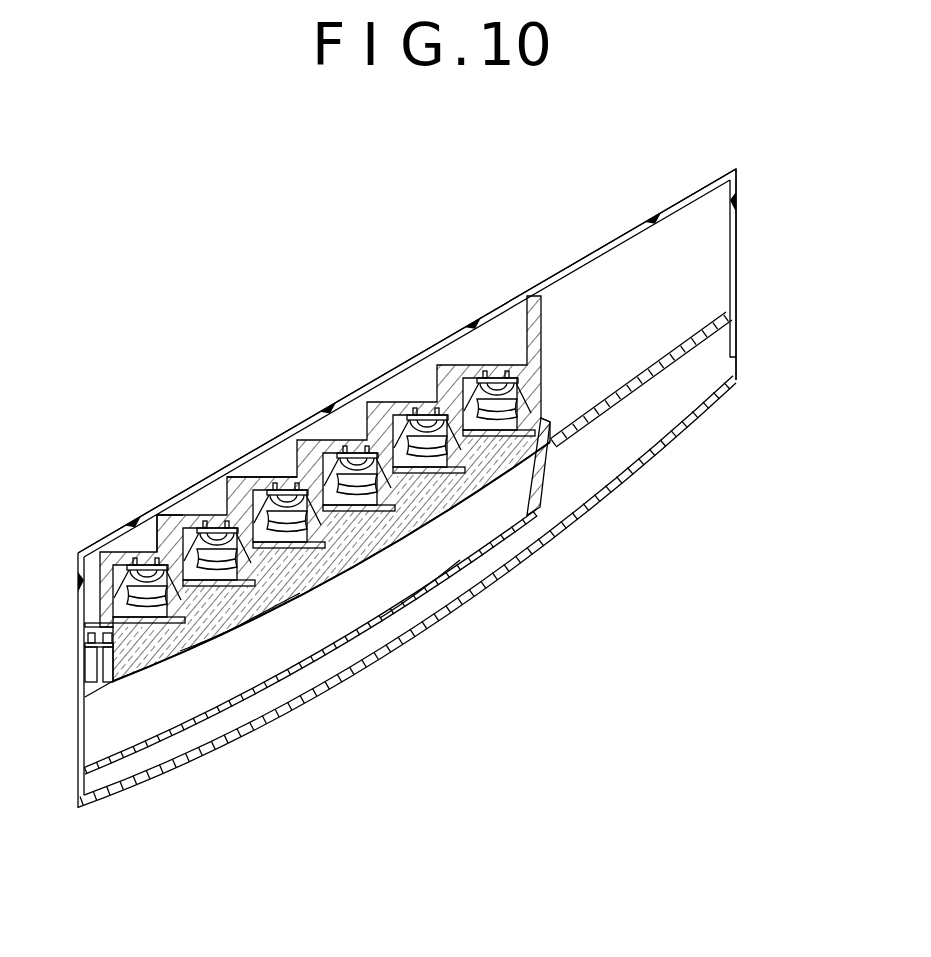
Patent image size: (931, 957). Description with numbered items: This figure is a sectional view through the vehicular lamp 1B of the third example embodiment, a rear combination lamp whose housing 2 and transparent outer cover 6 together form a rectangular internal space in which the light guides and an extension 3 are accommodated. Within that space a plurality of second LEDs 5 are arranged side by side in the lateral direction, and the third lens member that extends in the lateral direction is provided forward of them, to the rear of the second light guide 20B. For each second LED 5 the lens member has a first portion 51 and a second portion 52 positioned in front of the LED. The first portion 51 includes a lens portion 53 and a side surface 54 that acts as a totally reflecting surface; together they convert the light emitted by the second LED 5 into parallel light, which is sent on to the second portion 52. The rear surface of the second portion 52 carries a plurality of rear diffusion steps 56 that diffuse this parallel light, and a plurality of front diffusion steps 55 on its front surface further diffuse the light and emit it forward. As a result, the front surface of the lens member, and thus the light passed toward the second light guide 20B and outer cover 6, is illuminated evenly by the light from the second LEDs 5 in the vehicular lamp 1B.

The vehicular lamp 1B is at (683, 466).
The housing 2 is at (737, 255).
The extension 3 is at (677, 355).
The second LED 5 is at (490, 372).
The outer cover 6 is at (628, 480).
The second light guide 20B is at (415, 603).
The first portion 51 is at (300, 500).
The second portion 52 is at (285, 600).
The lens portion 53 is at (300, 590).
The side surface 54 is at (262, 487).
The front diffusion step 55 is at (226, 633).
The rear diffusion step 56 is at (176, 545).